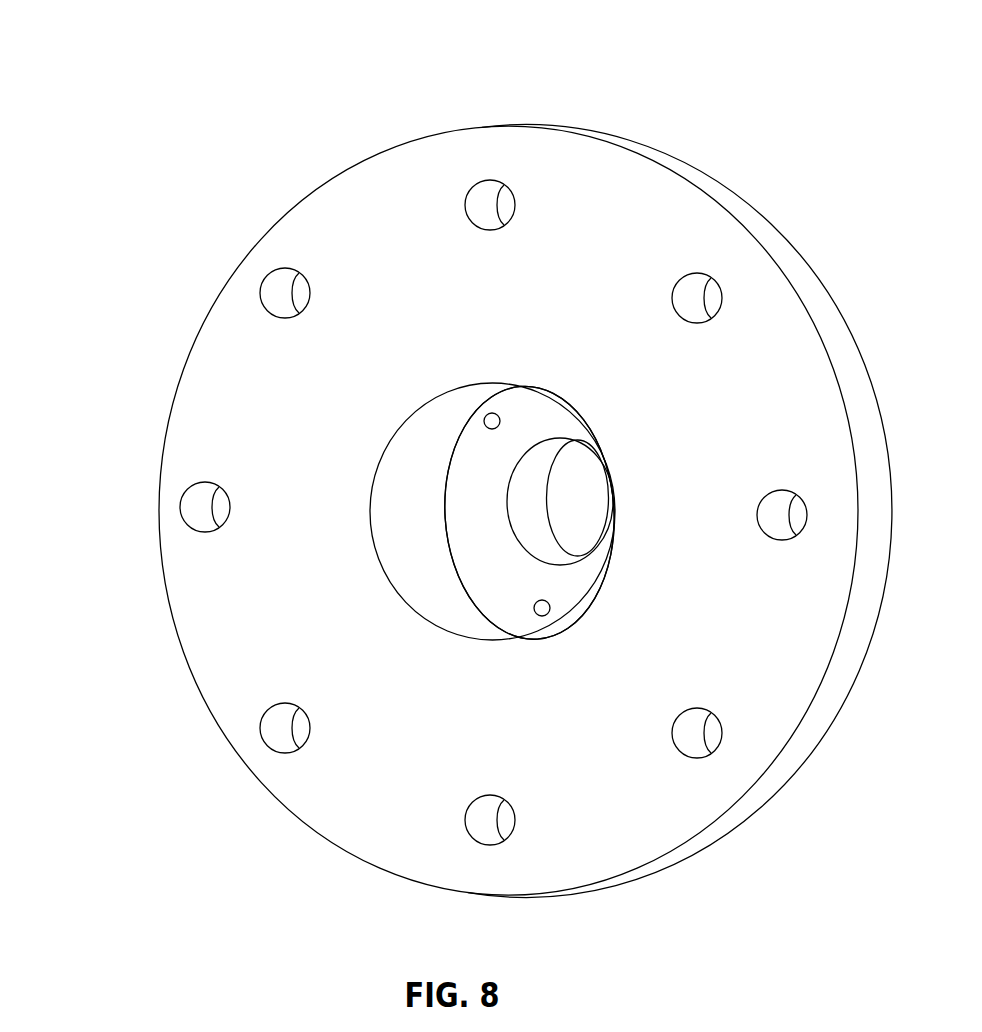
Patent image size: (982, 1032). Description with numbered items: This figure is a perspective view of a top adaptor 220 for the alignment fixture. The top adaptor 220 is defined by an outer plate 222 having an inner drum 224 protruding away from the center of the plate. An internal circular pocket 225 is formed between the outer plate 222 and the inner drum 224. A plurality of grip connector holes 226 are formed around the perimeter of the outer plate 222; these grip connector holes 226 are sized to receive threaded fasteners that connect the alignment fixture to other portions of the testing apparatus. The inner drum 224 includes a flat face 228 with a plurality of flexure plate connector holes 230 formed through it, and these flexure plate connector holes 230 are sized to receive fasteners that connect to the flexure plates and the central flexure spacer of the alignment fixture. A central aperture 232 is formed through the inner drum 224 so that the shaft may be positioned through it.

The top adaptor 220 is at (221, 262).
The outer plate 222 is at (478, 740).
The inner drum 224 is at (497, 499).
The internal circular pocket 225 is at (418, 558).
The grip connector holes 226 is at (284, 290).
The flat face 228 is at (502, 553).
The flexure plate connector holes 230 is at (500, 421).
The central aperture 232 is at (586, 493).